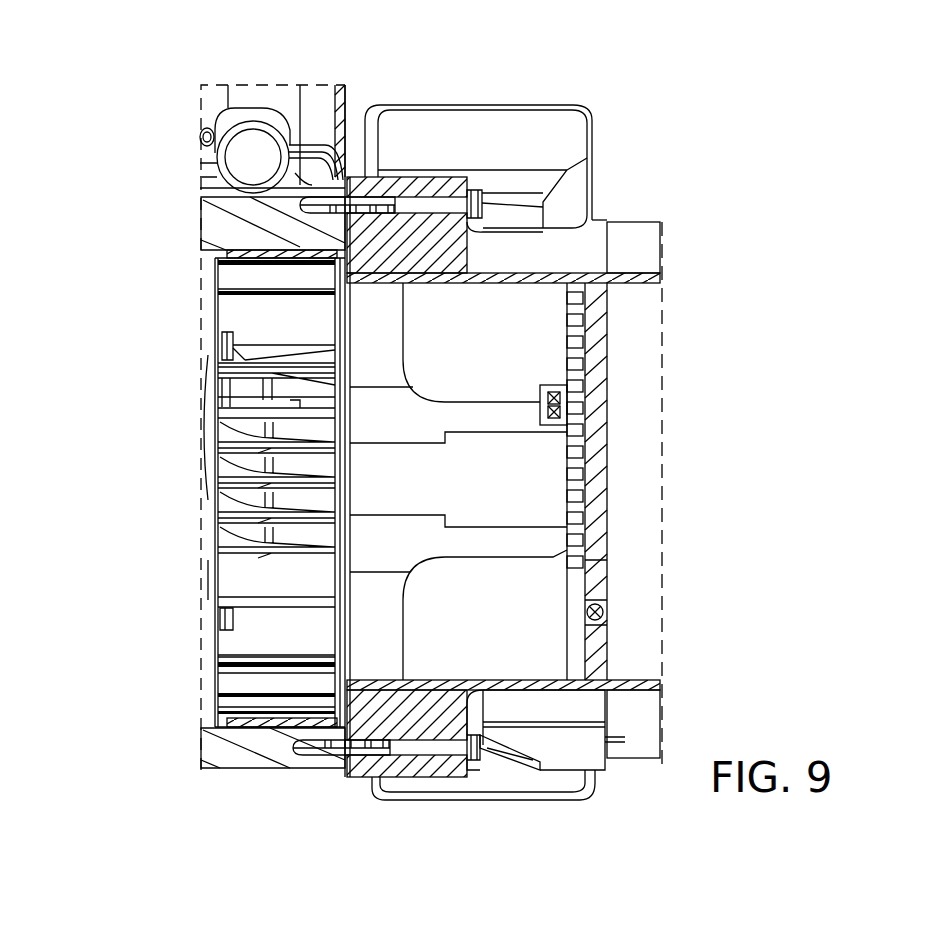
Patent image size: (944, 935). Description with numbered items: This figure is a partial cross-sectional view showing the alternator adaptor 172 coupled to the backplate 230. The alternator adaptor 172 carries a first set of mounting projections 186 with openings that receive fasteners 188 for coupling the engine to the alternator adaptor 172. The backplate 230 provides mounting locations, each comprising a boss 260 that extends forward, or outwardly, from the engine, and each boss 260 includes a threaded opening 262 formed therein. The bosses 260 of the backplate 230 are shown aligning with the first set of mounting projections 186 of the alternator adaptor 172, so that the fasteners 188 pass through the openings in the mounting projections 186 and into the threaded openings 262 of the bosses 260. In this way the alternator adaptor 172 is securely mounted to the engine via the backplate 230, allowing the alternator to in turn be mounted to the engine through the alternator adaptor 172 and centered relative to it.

The alternator adaptor 172 is at (434, 131).
The first set of mounting projections 186 is at (455, 182).
The fasteners 188 is at (547, 196).
The backplate 230 is at (174, 243).
The boss 260 is at (237, 217).
The threaded opening 262 is at (325, 196).